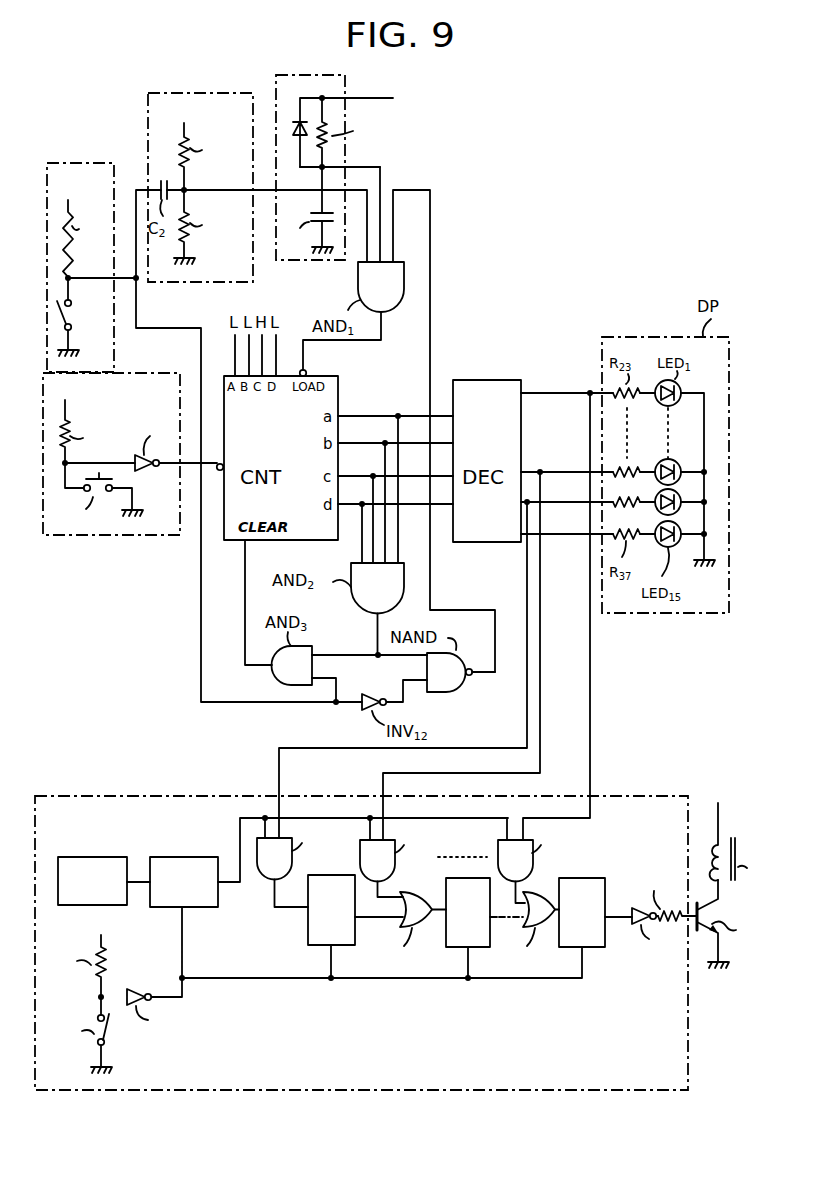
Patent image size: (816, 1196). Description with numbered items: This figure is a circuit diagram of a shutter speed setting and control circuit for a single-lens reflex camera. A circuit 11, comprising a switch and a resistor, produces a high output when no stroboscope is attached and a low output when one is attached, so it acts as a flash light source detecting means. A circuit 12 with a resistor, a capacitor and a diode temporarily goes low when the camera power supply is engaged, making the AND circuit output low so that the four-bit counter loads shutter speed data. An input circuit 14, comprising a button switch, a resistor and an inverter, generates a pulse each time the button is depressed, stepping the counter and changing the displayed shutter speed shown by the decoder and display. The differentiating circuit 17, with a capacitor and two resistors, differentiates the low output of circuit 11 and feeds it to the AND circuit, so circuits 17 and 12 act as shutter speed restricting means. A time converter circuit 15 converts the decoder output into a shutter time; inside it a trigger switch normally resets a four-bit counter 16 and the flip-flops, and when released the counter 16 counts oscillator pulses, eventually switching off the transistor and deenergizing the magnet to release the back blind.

The circuit 11 is at (96, 163).
The circuit 12 is at (307, 260).
The input circuit 14 is at (137, 535).
The time converter circuit 15 is at (627, 796).
The 4-bit counter 16 is at (180, 857).
The differentiating circuit 17 is at (227, 94).